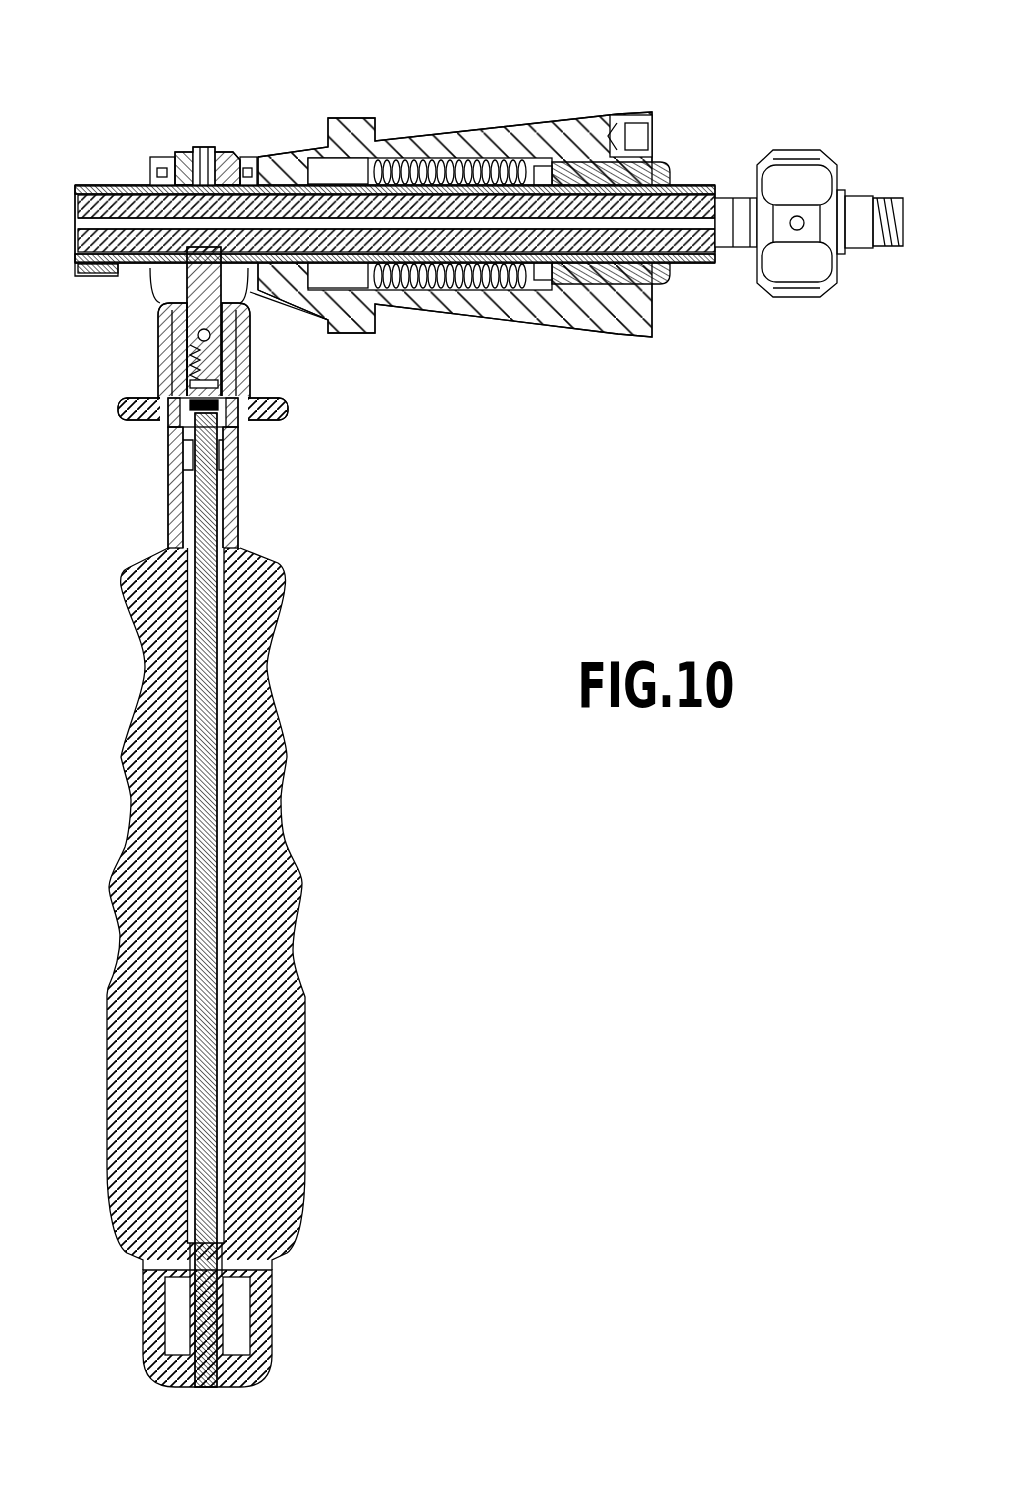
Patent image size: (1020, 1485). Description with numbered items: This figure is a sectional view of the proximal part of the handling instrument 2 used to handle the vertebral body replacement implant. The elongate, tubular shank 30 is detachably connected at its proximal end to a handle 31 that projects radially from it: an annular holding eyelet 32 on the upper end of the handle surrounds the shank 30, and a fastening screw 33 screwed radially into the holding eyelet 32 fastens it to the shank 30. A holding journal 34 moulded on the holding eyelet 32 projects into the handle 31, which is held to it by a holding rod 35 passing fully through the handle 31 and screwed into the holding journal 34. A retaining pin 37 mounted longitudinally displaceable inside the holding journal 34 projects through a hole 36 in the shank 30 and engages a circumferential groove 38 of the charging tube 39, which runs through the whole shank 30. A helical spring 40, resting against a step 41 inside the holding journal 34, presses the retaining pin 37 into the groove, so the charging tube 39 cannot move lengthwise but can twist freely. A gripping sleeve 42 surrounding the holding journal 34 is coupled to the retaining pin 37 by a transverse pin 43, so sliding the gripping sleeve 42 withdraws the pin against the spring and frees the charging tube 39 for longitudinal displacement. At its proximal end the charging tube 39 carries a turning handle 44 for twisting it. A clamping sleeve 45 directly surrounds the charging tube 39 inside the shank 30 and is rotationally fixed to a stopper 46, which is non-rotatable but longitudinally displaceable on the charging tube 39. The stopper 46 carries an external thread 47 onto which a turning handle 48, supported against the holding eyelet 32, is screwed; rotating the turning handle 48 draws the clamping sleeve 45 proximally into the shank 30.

The handling instrument 2 is at (460, 197).
The shank 30 is at (191, 131).
The handle 31 is at (268, 818).
The holding eyelet 32 is at (160, 155).
The fastening screw 33 is at (220, 150).
The holding journal 34 is at (178, 318).
The holding rod 35 is at (208, 665).
The hole 36 is at (170, 285).
The retaining pin 37 is at (215, 322).
The circumferential groove 38 is at (233, 152).
The charging tube 39 is at (80, 203).
The helical spring 40 is at (172, 420).
The step 41 is at (232, 397).
The gripping sleeve 42 is at (282, 412).
The transverse pin 43 is at (180, 362).
The turning handle 44 is at (792, 150).
The clamping sleeve 45 is at (96, 268).
The stopper 46 is at (570, 312).
The external thread 47 is at (566, 168).
The turning handle 48 is at (430, 135).